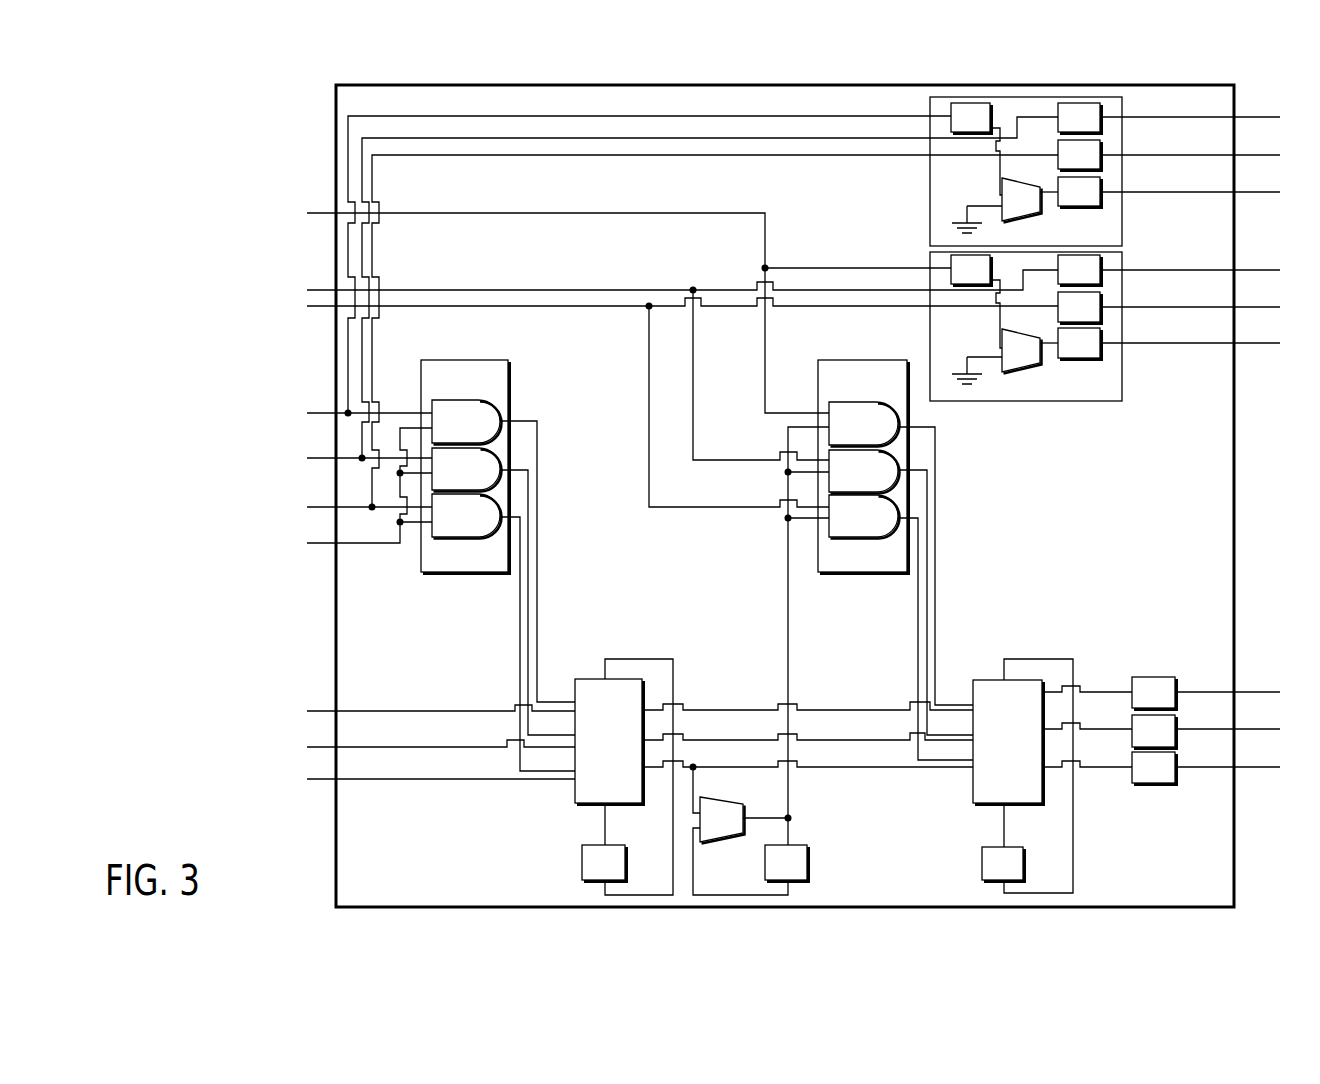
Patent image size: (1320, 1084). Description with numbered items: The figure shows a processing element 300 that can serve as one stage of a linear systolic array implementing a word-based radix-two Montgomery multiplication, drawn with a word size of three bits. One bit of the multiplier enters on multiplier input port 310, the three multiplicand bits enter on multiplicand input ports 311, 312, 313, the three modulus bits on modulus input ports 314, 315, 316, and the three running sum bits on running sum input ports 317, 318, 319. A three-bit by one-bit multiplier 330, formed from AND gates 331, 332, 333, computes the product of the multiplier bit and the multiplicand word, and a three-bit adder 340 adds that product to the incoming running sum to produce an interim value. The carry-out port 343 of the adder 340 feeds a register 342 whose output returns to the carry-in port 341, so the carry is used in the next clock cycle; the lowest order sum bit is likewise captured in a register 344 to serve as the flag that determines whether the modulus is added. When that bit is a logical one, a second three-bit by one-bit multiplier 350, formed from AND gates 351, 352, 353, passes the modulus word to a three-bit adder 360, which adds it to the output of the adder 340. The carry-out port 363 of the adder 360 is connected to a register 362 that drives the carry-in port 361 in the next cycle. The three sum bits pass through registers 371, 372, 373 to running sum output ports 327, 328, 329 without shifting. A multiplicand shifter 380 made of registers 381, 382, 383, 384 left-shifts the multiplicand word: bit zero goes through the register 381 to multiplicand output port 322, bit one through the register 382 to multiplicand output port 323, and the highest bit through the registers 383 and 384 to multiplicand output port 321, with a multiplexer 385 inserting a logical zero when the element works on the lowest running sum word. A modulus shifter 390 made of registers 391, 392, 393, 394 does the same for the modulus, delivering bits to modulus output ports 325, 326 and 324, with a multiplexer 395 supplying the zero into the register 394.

The processing element 300 is at (785, 496).
The multiplier input port 310 is at (350, 500).
The multiplicand input port 311 is at (349, 508).
The multiplicand input port 312 is at (349, 456).
The multiplicand input port 313 is at (349, 399).
The modulus input port 314 is at (663, 326).
The modulus input port 315 is at (663, 273).
The modulus input port 316 is at (548, 299).
The running sum input port 317 is at (399, 788).
The running sum input port 318 is at (399, 743).
The running sum input port 319 is at (399, 689).
The multiplicand output port 321 is at (1190, 176).
The multiplicand output port 322 is at (1190, 140).
The multiplicand output port 323 is at (1190, 104).
The modulus output port 324 is at (1190, 334).
The modulus output port 325 is at (1190, 297).
The modulus output port 326 is at (1190, 259).
The running sum output port 327 is at (1227, 757).
The running sum output port 328 is at (1227, 719).
The running sum output port 329 is at (1227, 682).
The three-bit by one-bit multiplier 330 is at (465, 467).
The AND gate 331 is at (503, 632).
The AND gate 332 is at (503, 591).
The AND gate 333 is at (503, 551).
The three-bit adder 340 is at (774, 742).
The carry-in port 341 is at (782, 778).
The register 342 is at (627, 777).
The carry-out port 343 is at (782, 709).
The register 344 is at (751, 855).
The three-bit by one-bit multiplier 350 is at (863, 467).
The AND gate 351 is at (811, 533).
The AND gate 352 is at (833, 512).
The AND gate 353 is at (880, 623).
The three-bit adder 360 is at (1052, 742).
The carry-in port 361 is at (1061, 778).
The register 362 is at (1027, 776).
The carry-out port 363 is at (1061, 704).
The register 371 is at (1154, 768).
The register 372 is at (1154, 732).
The register 373 is at (1154, 693).
The multiplicand shifter 380 is at (1026, 171).
The register 381 is at (1080, 155).
The register 382 is at (1080, 118).
The register 383 is at (976, 149).
The register 384 is at (1080, 192).
The multiplexer 385 is at (1005, 205).
The modulus shifter 390 is at (1026, 326).
The register 391 is at (1080, 308).
The register 392 is at (1080, 270).
The register 393 is at (847, 549).
The register 394 is at (1080, 344).
The multiplexer 395 is at (1005, 356).